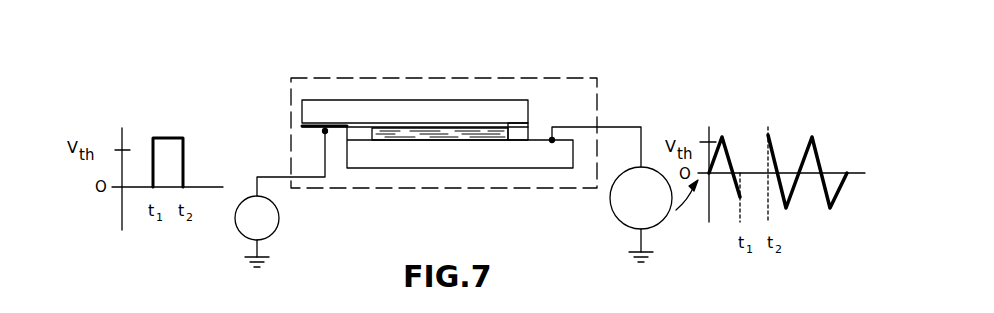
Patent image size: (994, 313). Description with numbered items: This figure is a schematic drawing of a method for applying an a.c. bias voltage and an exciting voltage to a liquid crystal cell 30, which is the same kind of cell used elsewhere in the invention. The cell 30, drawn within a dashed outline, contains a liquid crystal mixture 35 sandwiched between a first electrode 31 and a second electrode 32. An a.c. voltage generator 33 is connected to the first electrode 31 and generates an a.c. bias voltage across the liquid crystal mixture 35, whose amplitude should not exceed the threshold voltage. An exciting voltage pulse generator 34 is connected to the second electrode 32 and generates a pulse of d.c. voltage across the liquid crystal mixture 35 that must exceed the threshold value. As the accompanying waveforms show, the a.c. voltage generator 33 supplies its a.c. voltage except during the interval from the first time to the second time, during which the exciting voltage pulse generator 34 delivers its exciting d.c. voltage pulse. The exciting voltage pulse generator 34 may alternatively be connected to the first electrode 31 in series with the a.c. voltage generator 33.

The liquid crystal cell 30 is at (550, 78).
The first electrode 31 is at (460, 142).
The second electrode 32 is at (302, 128).
The a.c. voltage generator 33 is at (613, 213).
The exciting voltage pulse generator 34 is at (279, 222).
The liquid crystal mixture 35 is at (401, 129).